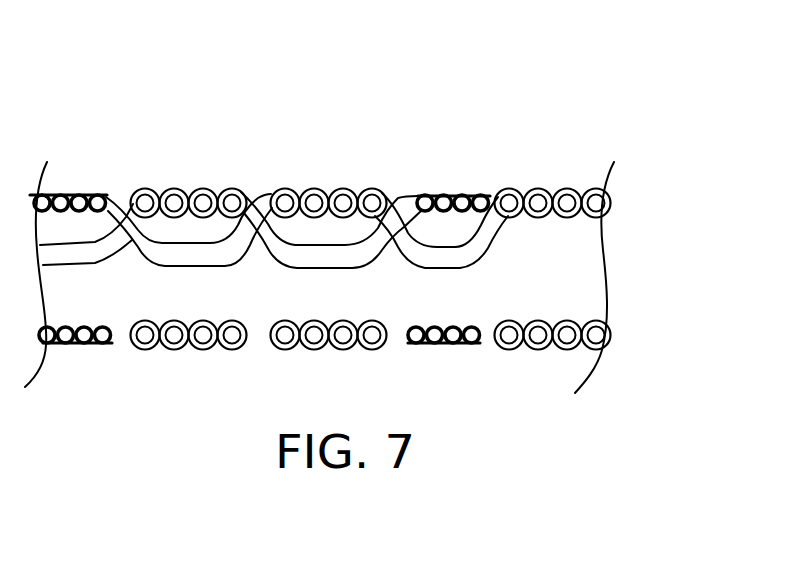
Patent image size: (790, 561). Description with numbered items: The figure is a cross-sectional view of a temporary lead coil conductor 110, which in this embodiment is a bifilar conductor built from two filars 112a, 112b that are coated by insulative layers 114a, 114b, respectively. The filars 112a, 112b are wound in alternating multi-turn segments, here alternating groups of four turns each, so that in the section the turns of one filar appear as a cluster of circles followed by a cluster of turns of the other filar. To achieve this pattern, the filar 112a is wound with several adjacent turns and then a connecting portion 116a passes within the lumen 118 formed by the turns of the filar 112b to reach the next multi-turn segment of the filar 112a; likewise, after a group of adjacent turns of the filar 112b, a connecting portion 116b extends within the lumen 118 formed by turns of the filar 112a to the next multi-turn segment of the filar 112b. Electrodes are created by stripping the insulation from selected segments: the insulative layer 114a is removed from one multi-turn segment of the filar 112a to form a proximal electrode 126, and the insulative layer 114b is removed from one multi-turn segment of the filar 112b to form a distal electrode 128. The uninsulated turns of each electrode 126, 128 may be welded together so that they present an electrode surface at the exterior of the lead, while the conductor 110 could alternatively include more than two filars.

The temporary lead coil conductor 110 is at (617, 107).
The lumen 118 is at (583, 287).
The distal electrode 128 is at (73, 145).
The proximal electrode 126 is at (490, 163).
The filar 112a is at (232, 190).
The filar 112b is at (373, 190).
The insulative layer 114a is at (168, 190).
The insulative layer 114b is at (322, 190).
The connecting portion 116a is at (360, 256).
The connecting portion 116b is at (205, 253).